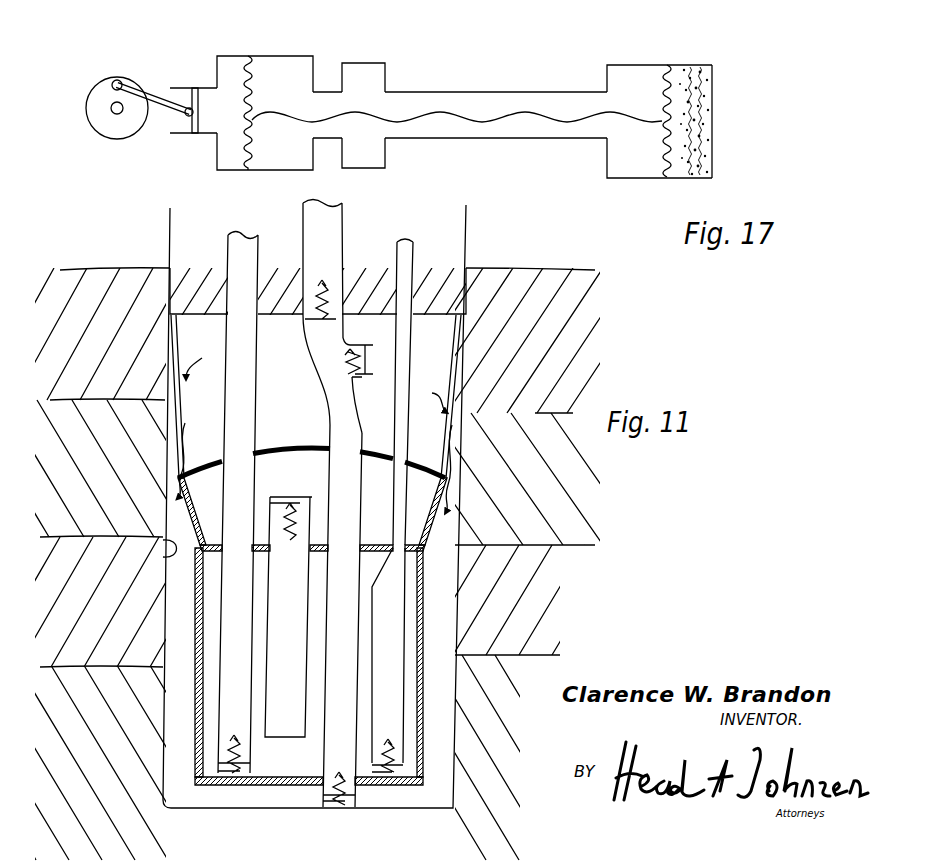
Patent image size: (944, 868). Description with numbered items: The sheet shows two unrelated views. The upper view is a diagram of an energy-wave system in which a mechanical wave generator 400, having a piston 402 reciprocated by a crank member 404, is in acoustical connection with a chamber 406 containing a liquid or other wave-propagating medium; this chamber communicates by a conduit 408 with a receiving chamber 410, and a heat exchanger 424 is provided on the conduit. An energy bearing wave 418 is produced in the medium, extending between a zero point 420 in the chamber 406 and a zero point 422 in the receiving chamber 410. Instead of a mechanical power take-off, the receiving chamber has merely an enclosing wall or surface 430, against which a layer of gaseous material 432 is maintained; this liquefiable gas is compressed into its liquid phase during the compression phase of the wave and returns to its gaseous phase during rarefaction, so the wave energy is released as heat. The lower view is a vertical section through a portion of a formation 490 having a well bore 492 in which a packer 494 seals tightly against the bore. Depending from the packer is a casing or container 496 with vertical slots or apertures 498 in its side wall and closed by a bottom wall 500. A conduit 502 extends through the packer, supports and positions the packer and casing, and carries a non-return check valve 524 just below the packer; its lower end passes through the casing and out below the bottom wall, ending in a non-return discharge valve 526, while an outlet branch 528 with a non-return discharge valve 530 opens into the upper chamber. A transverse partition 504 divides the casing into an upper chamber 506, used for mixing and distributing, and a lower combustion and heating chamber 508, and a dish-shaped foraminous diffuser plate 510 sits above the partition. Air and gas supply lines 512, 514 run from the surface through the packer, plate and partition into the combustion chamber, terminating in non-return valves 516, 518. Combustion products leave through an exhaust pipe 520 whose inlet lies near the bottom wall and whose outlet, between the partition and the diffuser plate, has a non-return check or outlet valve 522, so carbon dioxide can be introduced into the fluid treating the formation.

In FIG. 17, the mechanical wave generator 400 is at (187, 88).
In FIG. 17, the piston 402 is at (187, 133).
In FIG. 17, the crank member 404 is at (108, 82).
In FIG. 17, the chamber 406 is at (276, 60).
In FIG. 17, the conduit 408 is at (447, 92).
In FIG. 17, the receiving chamber 410 is at (618, 68).
In FIG. 17, the energy bearing wave 418 is at (500, 118).
In FIG. 17, the zero point 420 is at (248, 143).
In FIG. 17, the zero point 422 is at (663, 163).
In FIG. 17, the heat exchanger 424 is at (372, 72).
In FIG. 17, the enclosing wall or surface 430 is at (713, 102).
In FIG. 17, the layer of gaseous material 432 is at (712, 136).
In FIG. 11, the formation 490 is at (172, 327).
In FIG. 11, the well bore 492 is at (163, 550).
In FIG. 11, the packer 494 is at (450, 305).
In FIG. 11, the casing or container 496 is at (458, 342).
In FIG. 11, the vertical slots or apertures 498 is at (458, 403).
In FIG. 11, the bottom wall 500 is at (273, 787).
In FIG. 11, the conduit 502 is at (333, 232).
In FIG. 11, the transverse partition 504 is at (373, 542).
In FIG. 11, the upper chamber 506 is at (187, 364).
In FIG. 11, the lower combustion and heating chamber 508 is at (365, 617).
In FIG. 11, the foraminous diffuser plate 510 is at (310, 446).
In FIG. 11, the air supply line 512 is at (407, 250).
In FIG. 11, the gas supply line 514 is at (237, 247).
In FIG. 11, the non-return valve 516 is at (397, 783).
In FIG. 11, the non-return valve 518 is at (222, 773).
In FIG. 11, the exhaust pipe 520 is at (290, 730).
In FIG. 11, the non-return check or outlet valve 522 is at (288, 500).
In FIG. 11, the non-return check valve 524 is at (330, 320).
In FIG. 11, the non-return check or discharge valve 526 is at (334, 783).
In FIG. 11, the outlet branch 528 is at (368, 330).
In FIG. 11, the non-return discharge valve 530 is at (372, 361).